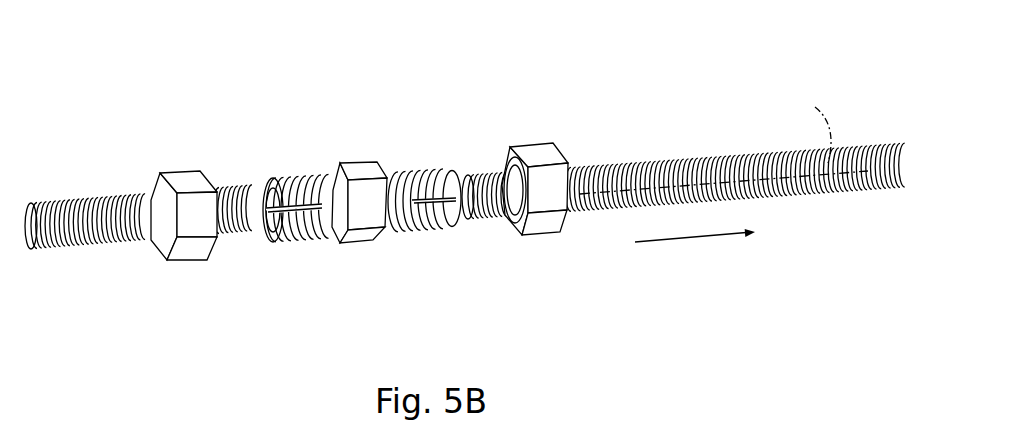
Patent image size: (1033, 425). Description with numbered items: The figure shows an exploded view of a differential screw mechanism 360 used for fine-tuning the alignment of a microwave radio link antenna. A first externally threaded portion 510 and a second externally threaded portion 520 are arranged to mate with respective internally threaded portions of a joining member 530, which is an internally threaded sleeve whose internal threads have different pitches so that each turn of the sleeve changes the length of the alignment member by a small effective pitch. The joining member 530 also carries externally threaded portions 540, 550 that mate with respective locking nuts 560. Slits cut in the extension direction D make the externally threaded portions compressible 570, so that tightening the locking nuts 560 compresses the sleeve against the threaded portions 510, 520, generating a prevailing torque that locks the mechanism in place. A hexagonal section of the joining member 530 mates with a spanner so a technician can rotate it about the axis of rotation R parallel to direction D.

The differential screw mechanism 360 is at (568, 80).
The first externally threaded portion 510 is at (138, 208).
The second externally threaded portion 520 is at (487, 178).
The joining member 530 is at (370, 173).
The externally threaded portion 540 is at (308, 232).
The externally threaded portion 550 is at (420, 230).
The locking nut 560 is at (193, 253).
The compressible portion 570 is at (283, 180).